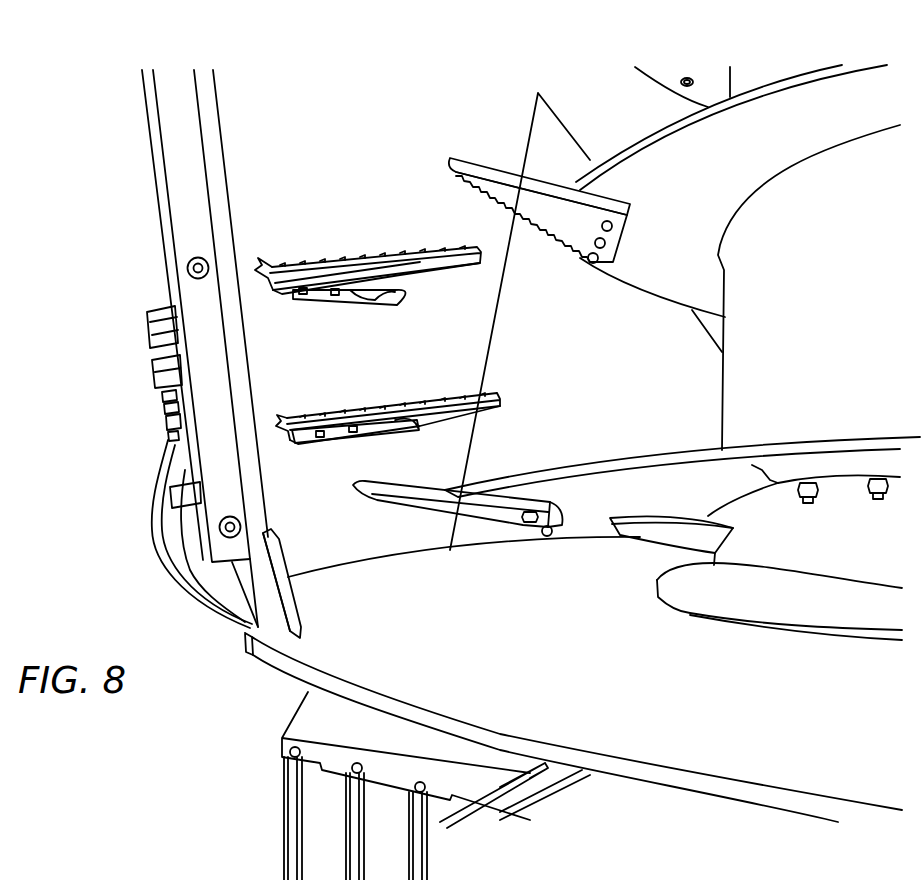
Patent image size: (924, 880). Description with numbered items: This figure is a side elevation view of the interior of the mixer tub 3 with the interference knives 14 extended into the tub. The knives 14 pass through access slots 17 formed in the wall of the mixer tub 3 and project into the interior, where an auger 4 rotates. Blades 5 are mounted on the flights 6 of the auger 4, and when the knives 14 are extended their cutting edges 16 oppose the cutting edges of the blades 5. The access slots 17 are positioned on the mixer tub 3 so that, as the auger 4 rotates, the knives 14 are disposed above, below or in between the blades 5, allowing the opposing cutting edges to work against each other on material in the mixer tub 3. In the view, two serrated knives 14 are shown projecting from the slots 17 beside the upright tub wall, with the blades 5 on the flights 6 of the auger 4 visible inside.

The mixer tub 3 is at (180, 130).
The auger 4 is at (823, 375).
The blades 5 is at (490, 172).
The flights 6 is at (590, 486).
The knives 14 is at (407, 262).
The cutting edges 16 is at (402, 262).
The access slots 17 is at (352, 306).